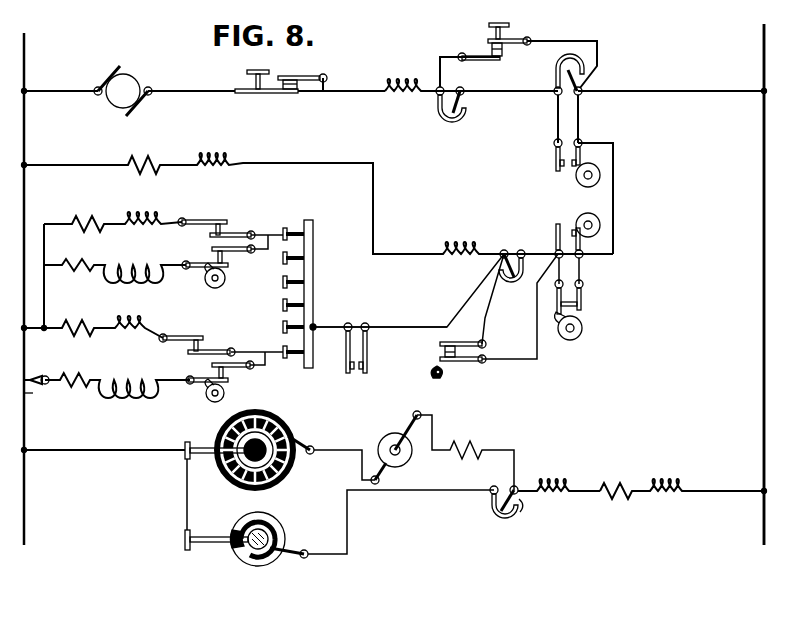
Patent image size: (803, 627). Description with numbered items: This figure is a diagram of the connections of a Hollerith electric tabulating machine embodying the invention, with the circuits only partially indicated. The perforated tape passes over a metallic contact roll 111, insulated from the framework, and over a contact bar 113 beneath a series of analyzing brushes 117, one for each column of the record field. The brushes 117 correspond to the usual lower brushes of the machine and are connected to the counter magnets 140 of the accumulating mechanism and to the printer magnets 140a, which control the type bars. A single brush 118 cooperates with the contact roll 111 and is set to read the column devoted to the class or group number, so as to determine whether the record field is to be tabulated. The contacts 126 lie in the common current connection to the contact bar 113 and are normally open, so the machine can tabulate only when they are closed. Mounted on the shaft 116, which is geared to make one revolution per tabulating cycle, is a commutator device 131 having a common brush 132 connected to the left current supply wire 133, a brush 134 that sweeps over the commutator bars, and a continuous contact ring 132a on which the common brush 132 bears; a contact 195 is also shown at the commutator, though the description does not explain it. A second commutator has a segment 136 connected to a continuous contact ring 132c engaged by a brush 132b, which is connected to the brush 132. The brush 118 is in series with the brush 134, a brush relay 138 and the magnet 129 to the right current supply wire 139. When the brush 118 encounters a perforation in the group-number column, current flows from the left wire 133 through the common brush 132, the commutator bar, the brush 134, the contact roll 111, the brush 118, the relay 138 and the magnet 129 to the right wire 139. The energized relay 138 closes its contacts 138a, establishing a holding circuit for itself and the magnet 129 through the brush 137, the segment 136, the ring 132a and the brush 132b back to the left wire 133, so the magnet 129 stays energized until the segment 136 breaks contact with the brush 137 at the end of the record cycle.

The contact roll 111 is at (410, 458).
The contact bar 113 is at (309, 300).
The shaft 116 is at (228, 432).
The brushes 117 is at (283, 289).
The brush 118 is at (437, 378).
The contacts 126 is at (353, 372).
The magnet 129 is at (664, 498).
The commutator device 131 is at (236, 391).
The common brush 132 is at (216, 456).
The continuous contact ring 132a is at (243, 446).
The brush 132b is at (208, 544).
The continuous contact ring 132c is at (268, 562).
The left current supply wire 133 is at (45, 395).
The brush 134 is at (340, 421).
The segment 136 is at (280, 518).
The brush 137 is at (291, 553).
The brush relay 138 is at (555, 498).
The contacts 138a is at (521, 512).
The right current supply wire 139 is at (764, 313).
The counter magnets 140 is at (152, 238).
The printer magnets 140a is at (136, 392).
The contact 195 is at (298, 426).